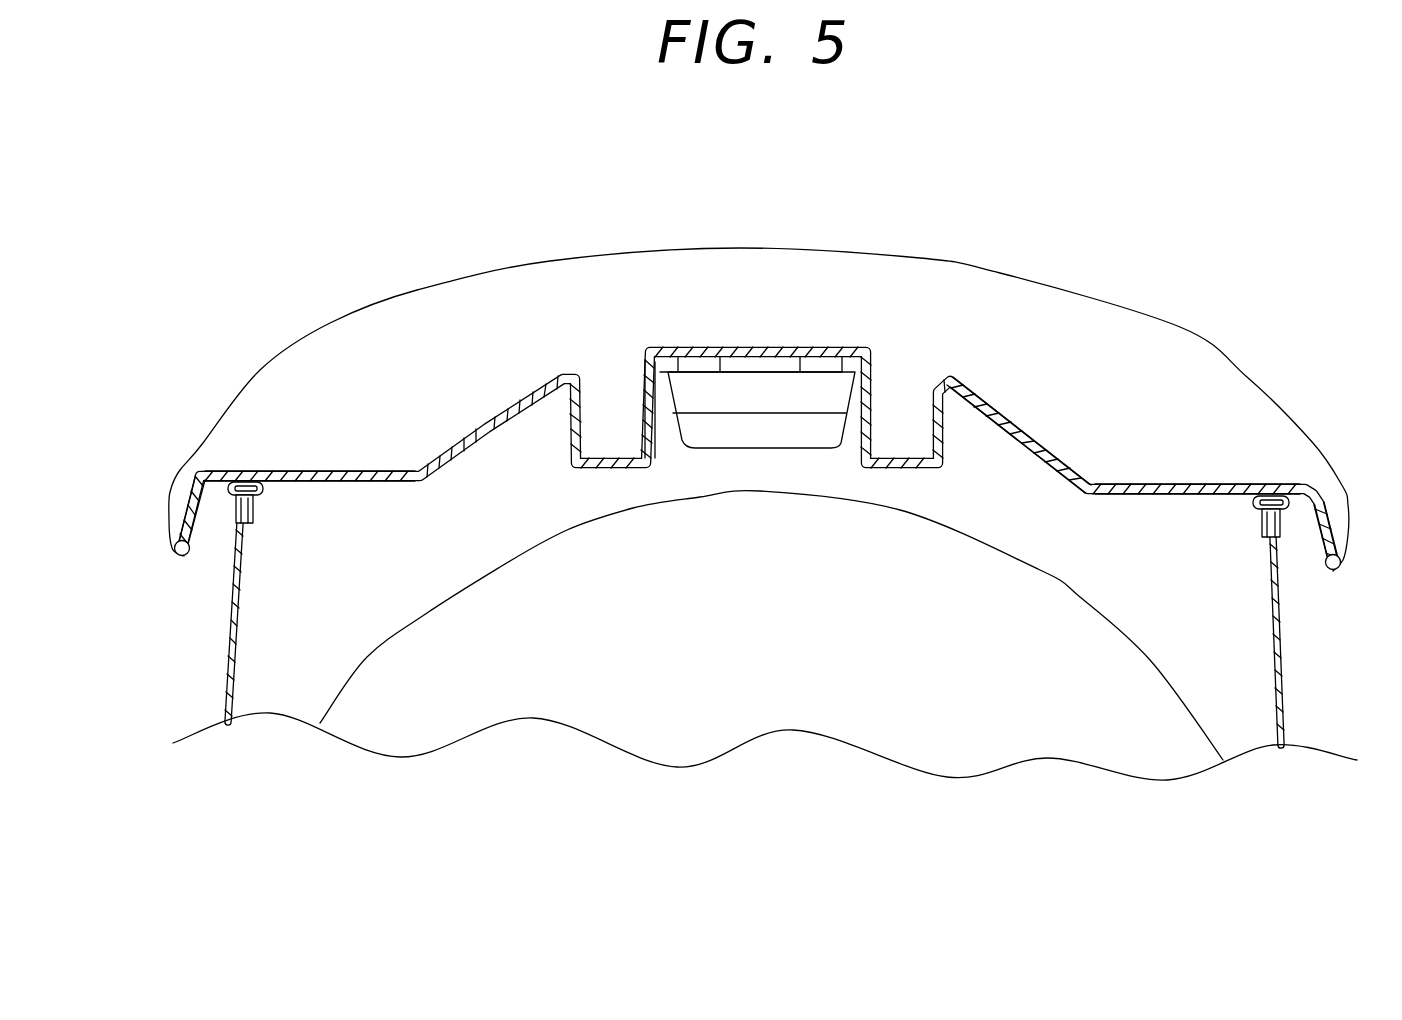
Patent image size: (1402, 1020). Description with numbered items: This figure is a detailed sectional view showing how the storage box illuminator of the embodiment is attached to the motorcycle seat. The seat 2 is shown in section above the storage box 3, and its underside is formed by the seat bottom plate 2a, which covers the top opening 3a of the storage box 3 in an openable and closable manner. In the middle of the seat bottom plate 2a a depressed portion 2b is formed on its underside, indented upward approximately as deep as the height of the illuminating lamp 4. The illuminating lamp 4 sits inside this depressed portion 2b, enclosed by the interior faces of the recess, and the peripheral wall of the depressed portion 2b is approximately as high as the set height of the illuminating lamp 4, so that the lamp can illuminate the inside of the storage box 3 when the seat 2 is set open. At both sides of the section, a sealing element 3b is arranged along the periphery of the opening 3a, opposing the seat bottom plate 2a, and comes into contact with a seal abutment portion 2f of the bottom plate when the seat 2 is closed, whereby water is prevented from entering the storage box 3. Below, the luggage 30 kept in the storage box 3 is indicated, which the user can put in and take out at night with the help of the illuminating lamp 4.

The seat 2 is at (762, 249).
The seat bottom plate 2a is at (1077, 463).
The depressed portion 2b is at (658, 400).
The seal abutment portion 2f is at (277, 490).
The storage box 3 is at (1289, 703).
The top opening 3a is at (1087, 512).
The sealing element 3b is at (205, 476).
The illuminating lamp 4 is at (829, 390).
The luggage 30 is at (928, 722).